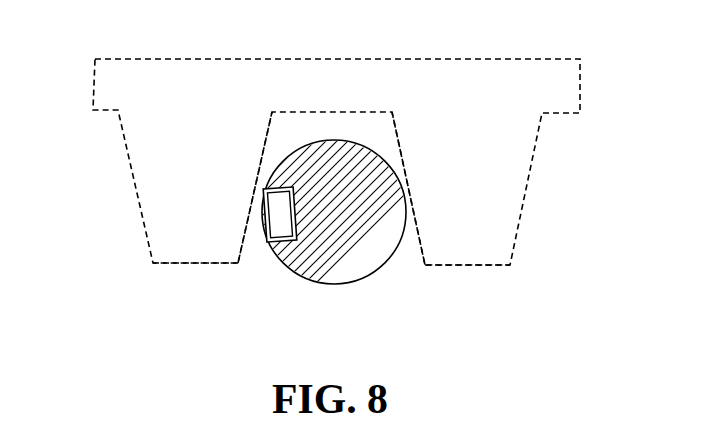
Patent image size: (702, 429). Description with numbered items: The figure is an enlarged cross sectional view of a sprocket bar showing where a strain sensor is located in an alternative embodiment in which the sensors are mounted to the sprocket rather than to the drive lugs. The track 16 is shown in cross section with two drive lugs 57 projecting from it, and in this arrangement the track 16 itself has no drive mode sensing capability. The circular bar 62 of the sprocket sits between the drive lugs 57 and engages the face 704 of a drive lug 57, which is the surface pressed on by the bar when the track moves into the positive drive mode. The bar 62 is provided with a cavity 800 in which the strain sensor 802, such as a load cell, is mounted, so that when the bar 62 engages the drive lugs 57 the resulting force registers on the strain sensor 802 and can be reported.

The track 16 is at (480, 59).
The drive lug 57 is at (190, 253).
The bar 62 is at (392, 250).
The face 704 is at (242, 246).
The cavity 800 is at (265, 204).
The strain sensor 802 is at (280, 222).